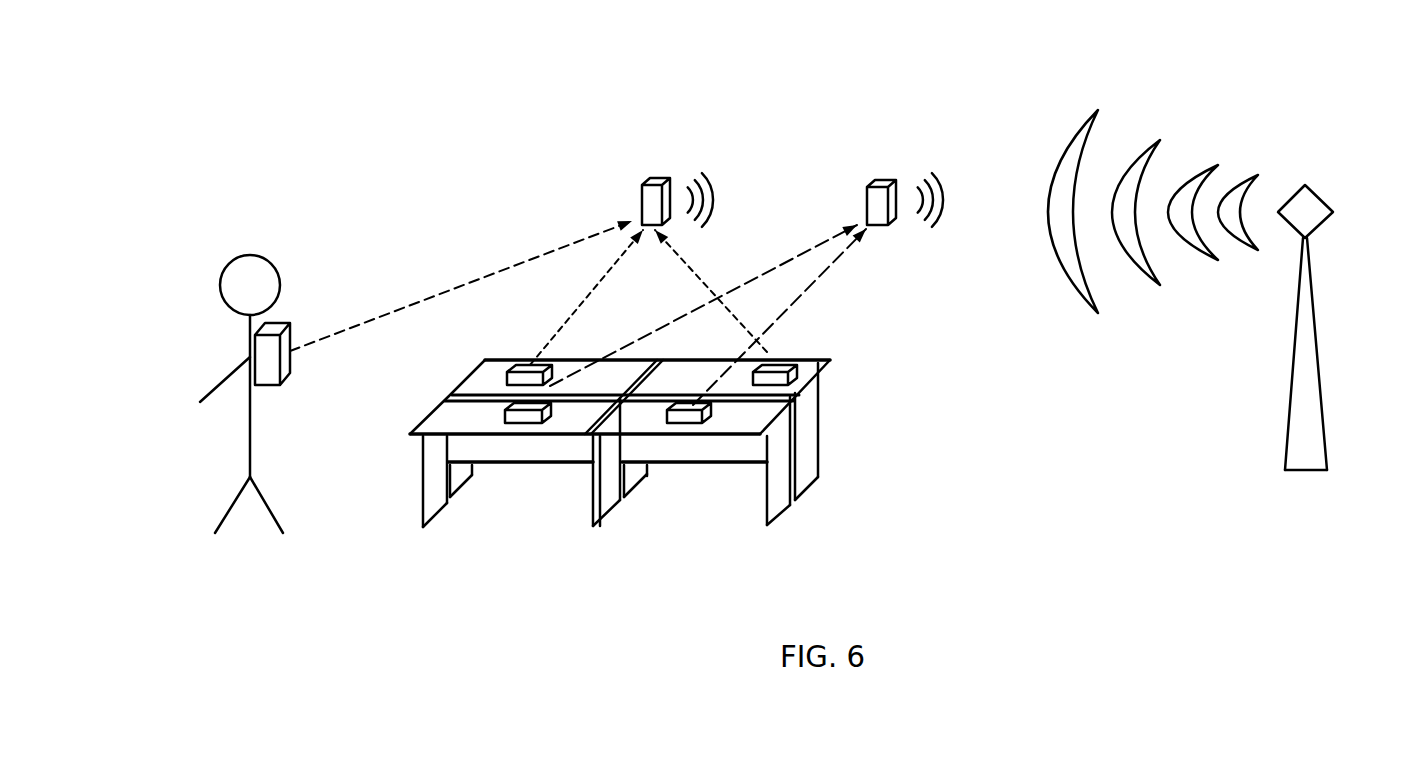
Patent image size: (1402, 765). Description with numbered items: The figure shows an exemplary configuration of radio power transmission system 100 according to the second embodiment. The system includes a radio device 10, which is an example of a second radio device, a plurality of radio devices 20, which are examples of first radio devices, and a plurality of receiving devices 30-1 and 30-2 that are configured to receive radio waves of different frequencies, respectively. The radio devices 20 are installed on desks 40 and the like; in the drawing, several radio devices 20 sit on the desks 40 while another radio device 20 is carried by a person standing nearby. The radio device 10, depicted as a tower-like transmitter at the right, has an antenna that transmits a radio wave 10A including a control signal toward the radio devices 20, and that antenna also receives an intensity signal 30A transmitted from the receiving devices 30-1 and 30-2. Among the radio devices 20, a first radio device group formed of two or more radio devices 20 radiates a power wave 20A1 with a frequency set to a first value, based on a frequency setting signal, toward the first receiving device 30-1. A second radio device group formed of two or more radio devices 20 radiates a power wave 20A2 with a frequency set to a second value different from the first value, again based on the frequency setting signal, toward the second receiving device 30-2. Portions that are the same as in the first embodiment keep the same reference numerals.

The radio power transmission system 100 is at (748, 45).
The radio device 20 is at (275, 327).
The power wave 20A1 is at (593, 290).
The power wave 20A2 is at (781, 268).
The first receiving device 30-1 is at (653, 178).
The second receiving device 30-2 is at (882, 178).
The intensity signal 30A is at (714, 178).
The desk 40 is at (778, 502).
The radio device 10 is at (1304, 472).
The radio wave 10A is at (1160, 140).